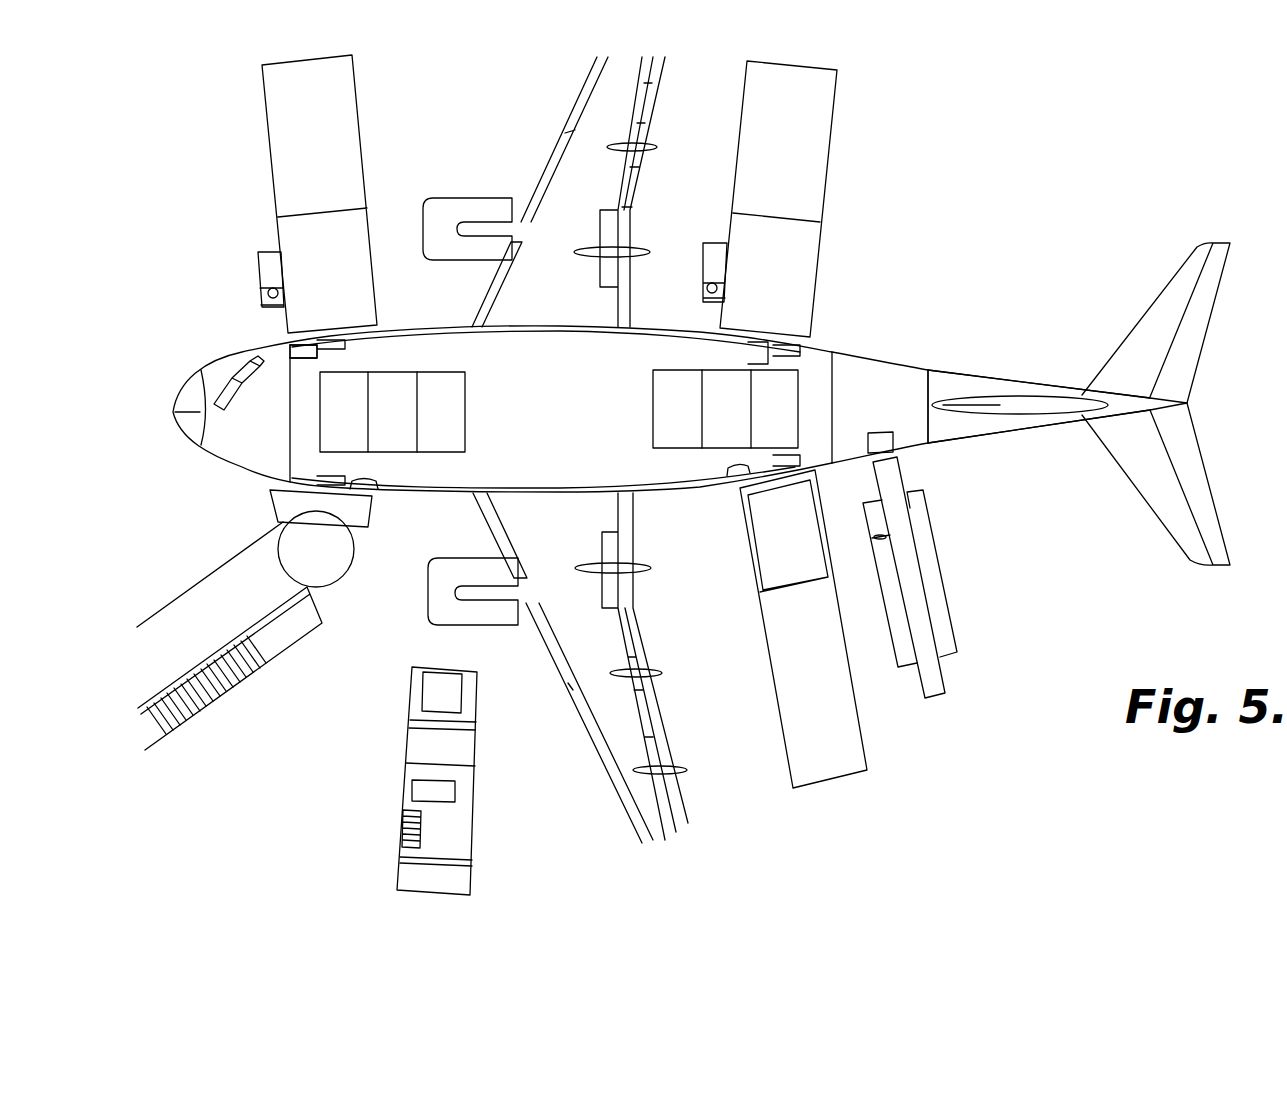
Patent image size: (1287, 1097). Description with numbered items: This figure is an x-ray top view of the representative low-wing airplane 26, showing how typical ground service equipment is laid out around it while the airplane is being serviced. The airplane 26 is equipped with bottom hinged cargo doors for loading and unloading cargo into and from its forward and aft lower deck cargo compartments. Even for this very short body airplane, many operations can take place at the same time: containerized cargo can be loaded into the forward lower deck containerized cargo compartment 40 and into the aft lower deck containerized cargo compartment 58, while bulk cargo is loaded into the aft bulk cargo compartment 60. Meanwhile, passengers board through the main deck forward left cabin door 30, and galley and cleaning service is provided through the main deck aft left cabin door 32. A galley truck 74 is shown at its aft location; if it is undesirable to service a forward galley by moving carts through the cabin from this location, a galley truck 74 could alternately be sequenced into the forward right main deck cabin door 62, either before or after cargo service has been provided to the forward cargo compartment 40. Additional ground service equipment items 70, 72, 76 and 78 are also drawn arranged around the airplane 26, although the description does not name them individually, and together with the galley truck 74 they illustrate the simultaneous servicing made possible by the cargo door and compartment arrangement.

The low-wing airplane 26 is at (910, 362).
The main deck forward left cabin door 30 is at (377, 480).
The main deck aft left cabin door 32 is at (727, 468).
The forward lower deck containerized cargo compartment 40 is at (390, 385).
The aft lower deck containerized cargo compartment 58 is at (800, 392).
The aft bulk cargo compartment 60 is at (903, 428).
The forward right main deck cabin door 62 is at (285, 352).
The jet bridge 70 is at (183, 593).
The catering truck 72 is at (360, 128).
The galley truck 74 is at (768, 640).
The service vehicle 76 is at (940, 563).
The baggage truck 78 is at (407, 690).